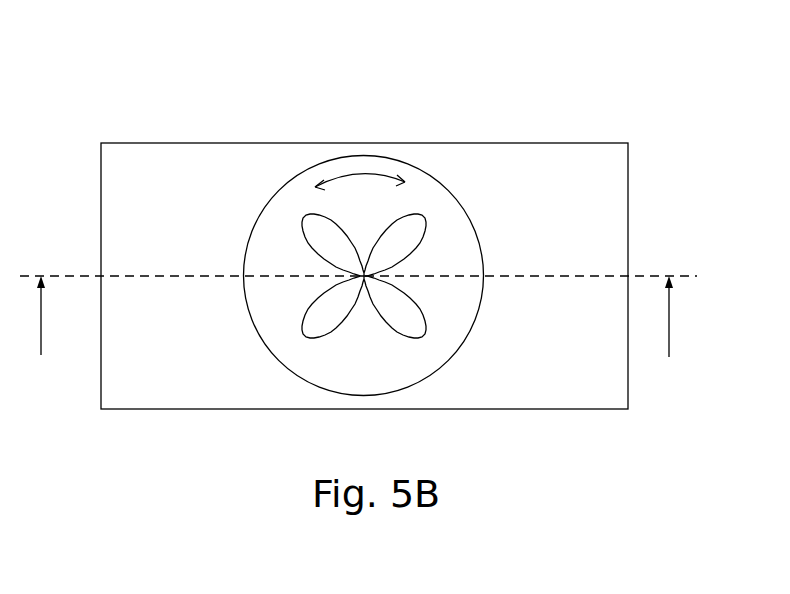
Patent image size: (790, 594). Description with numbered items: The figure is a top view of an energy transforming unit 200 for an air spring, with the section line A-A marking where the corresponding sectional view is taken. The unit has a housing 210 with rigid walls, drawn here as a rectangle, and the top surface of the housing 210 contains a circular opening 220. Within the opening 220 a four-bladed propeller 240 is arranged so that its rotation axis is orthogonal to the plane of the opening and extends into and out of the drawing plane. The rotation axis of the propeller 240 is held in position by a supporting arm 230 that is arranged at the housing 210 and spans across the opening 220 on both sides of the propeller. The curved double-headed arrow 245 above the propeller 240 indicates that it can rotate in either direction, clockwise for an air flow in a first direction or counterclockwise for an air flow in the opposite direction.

The energy transforming unit 200 is at (126, 85).
The housing 210 is at (612, 170).
The opening 220 is at (443, 321).
The supporting arm 230 is at (283, 276).
The propeller 240 is at (320, 320).
The arrow 245 is at (360, 173).